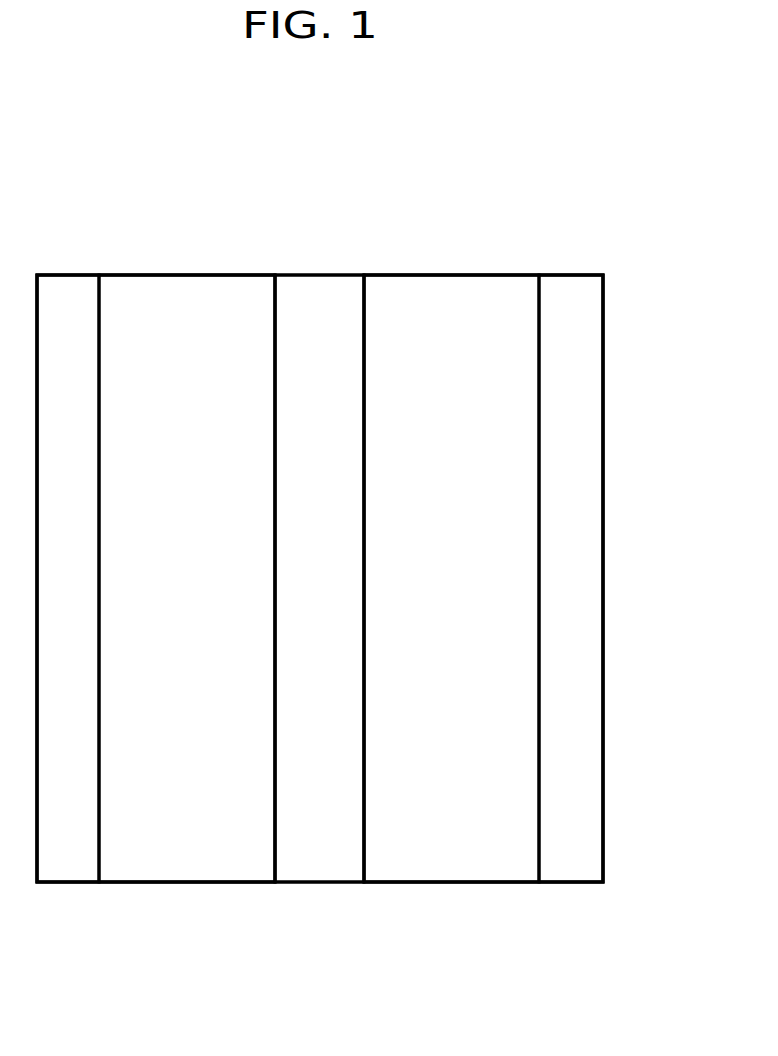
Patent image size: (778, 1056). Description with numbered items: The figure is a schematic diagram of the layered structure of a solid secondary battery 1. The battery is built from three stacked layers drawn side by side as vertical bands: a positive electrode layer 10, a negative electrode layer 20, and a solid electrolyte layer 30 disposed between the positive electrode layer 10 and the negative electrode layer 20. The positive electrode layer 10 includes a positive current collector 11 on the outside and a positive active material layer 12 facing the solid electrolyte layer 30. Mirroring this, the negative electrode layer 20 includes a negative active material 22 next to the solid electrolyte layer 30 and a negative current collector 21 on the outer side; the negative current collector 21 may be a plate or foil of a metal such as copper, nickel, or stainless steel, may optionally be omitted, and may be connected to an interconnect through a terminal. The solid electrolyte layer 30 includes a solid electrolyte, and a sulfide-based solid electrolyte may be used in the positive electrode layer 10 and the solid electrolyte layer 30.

The solid secondary battery 1 is at (638, 182).
The positive electrode layer 10 is at (55, 214).
The positive current collector 11 is at (70, 292).
The positive active material layer 12 is at (190, 292).
The solid electrolyte layer 30 is at (319, 292).
The negative electrode layer 20 is at (586, 214).
The negative active material 22 is at (451, 292).
The negative current collector 21 is at (569, 292).